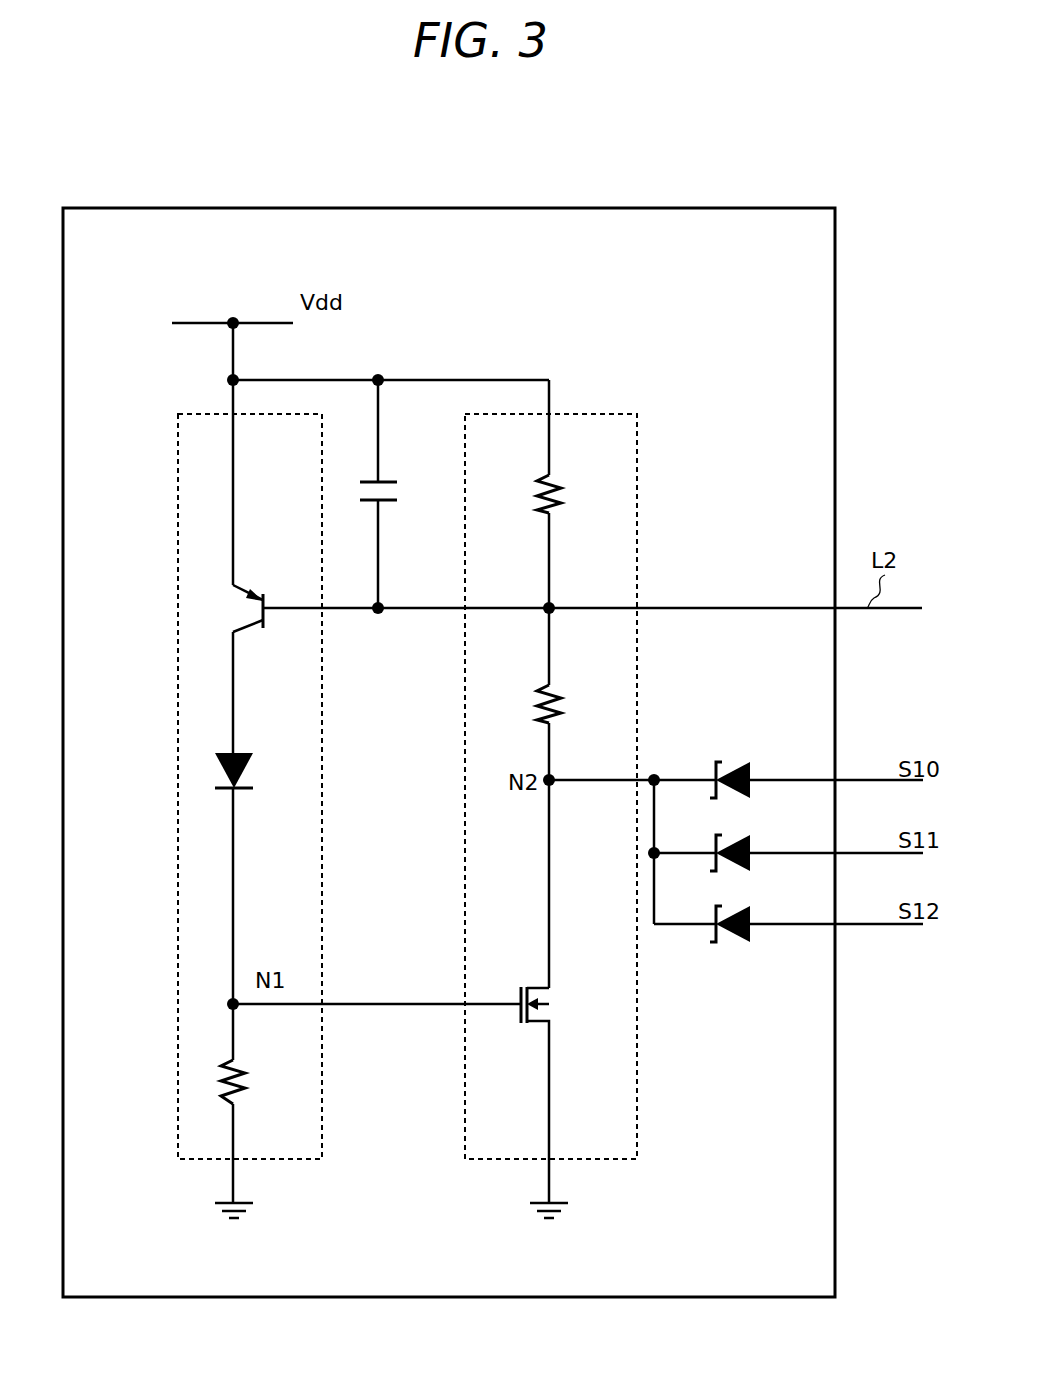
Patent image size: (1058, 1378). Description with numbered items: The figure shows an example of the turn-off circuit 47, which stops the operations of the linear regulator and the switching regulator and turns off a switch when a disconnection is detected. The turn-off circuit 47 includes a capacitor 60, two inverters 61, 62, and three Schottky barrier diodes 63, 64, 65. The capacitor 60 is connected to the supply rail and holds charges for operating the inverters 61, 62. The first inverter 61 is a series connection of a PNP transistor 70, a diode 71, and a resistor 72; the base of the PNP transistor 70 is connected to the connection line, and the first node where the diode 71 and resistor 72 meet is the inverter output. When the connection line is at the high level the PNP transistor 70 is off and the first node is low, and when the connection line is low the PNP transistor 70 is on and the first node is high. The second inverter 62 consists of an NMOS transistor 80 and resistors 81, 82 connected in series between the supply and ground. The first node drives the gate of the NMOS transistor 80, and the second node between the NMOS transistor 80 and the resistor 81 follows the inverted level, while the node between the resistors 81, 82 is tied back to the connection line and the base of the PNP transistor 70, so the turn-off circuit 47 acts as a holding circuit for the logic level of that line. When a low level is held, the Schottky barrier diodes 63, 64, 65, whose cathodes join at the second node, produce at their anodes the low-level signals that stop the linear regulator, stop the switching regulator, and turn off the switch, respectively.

The turn-off circuit 47 is at (205, 208).
The capacitor 60 is at (397, 482).
The inverter 61 is at (178, 413).
The inverter 62 is at (612, 414).
The Schottky barrier diode 63 is at (749, 767).
The Schottky barrier diode 64 is at (749, 839).
The Schottky barrier diode 65 is at (749, 912).
The PNP transistor 70 is at (263, 600).
The diode 71 is at (249, 756).
The resistor 72 is at (245, 1074).
The NMOS transistor 80 is at (521, 988).
The resistor 81 is at (561, 697).
The resistor 82 is at (561, 488).